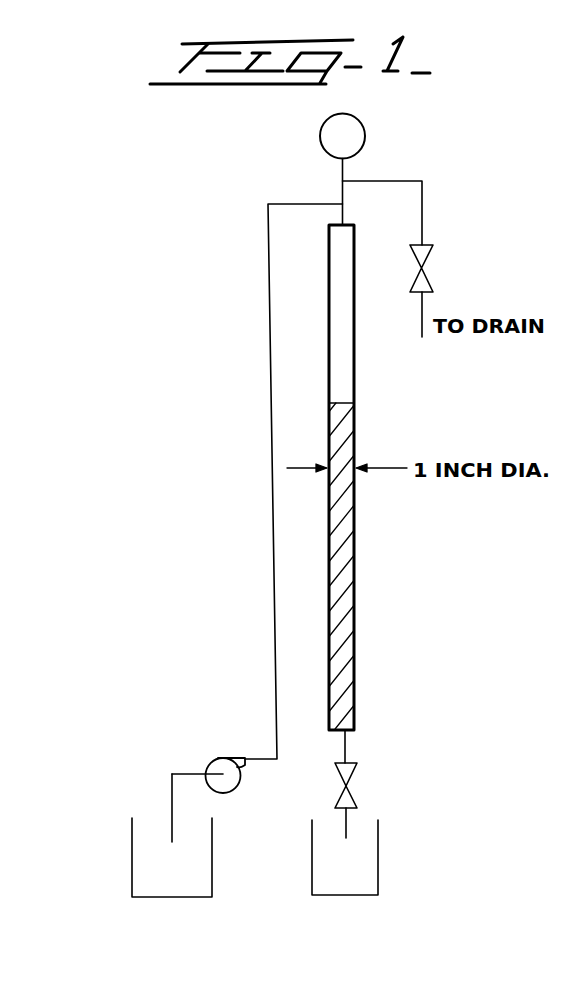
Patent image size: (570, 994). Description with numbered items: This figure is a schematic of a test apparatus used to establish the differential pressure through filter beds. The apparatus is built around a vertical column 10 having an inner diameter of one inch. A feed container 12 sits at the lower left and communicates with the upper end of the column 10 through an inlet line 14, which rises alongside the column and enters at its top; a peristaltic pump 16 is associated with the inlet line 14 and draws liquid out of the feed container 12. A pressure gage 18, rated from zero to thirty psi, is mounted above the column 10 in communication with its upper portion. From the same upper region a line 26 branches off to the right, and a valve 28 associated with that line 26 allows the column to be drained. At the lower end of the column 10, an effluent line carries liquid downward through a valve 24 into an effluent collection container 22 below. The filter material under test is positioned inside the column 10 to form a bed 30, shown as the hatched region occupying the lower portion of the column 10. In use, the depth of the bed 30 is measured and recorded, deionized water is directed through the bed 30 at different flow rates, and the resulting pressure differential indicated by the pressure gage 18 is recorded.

The column 10 is at (357, 528).
The feed container 12 is at (147, 864).
The inlet line 14 is at (275, 582).
The peristaltic pump 16 is at (219, 758).
The pressure gage 18 is at (365, 133).
The effluent collection container 22 is at (368, 852).
The valve 24 is at (347, 752).
The line 26 is at (422, 207).
The valve 28 is at (425, 273).
The bed 30 is at (358, 578).